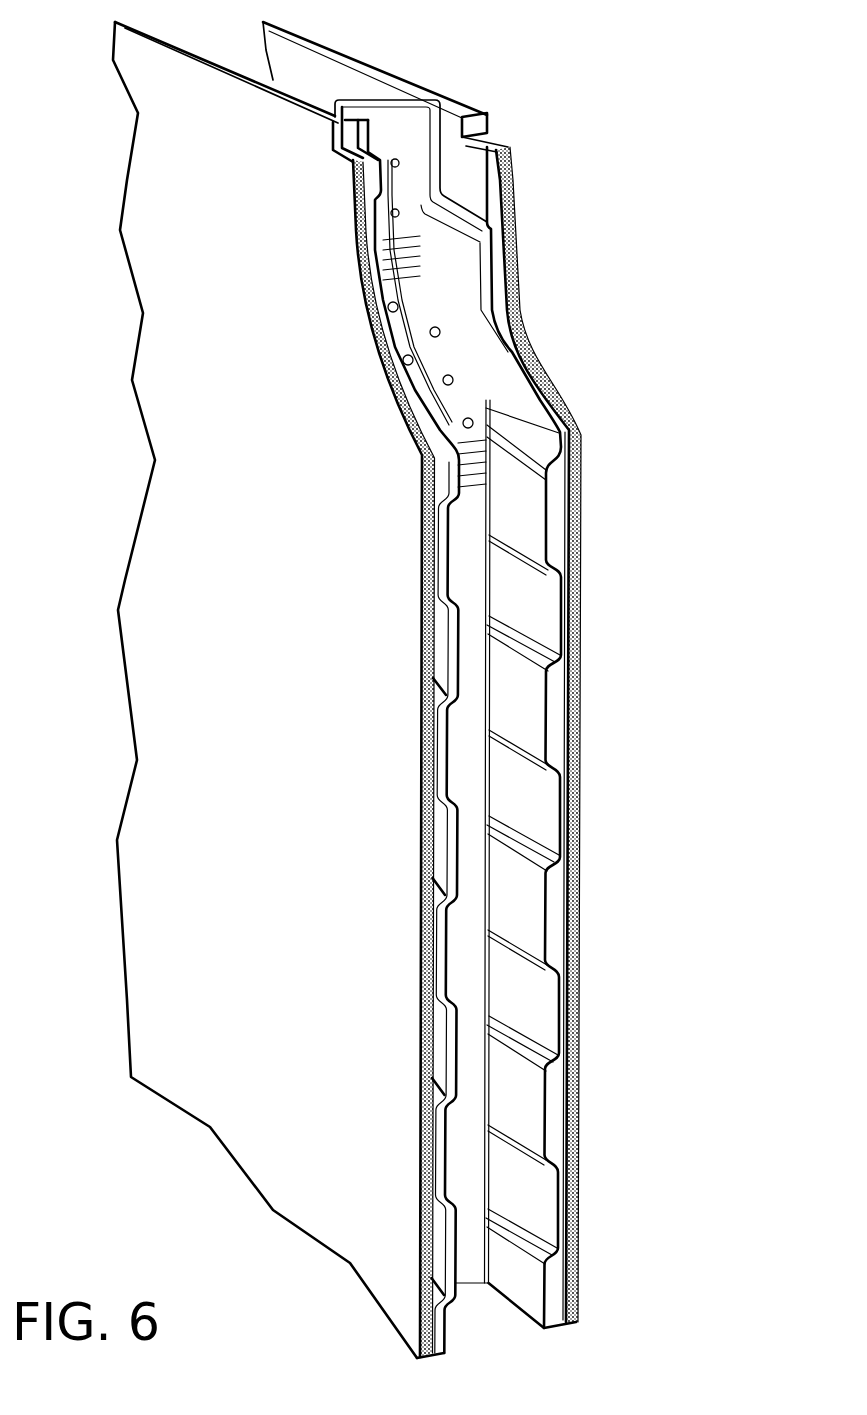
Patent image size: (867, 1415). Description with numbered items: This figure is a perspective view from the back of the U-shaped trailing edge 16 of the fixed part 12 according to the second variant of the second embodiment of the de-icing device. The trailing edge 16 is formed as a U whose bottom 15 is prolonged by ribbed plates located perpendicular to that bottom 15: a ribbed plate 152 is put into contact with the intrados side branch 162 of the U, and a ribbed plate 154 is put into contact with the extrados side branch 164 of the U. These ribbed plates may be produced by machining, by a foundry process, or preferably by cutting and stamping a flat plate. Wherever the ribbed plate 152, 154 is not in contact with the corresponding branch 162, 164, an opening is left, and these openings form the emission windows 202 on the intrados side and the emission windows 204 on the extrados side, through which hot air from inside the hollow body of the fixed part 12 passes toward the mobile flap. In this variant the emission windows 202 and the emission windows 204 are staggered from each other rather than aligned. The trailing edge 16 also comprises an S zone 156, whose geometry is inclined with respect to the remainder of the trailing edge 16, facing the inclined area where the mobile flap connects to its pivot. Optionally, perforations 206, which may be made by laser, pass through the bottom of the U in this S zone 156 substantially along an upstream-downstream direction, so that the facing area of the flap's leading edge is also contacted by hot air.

The fixed part 12 is at (170, 530).
The bottom of the trailing edge 15 is at (465, 946).
The trailing edge 16 is at (511, 729).
The ribbed plate 152 is at (565, 800).
The ribbed plate 154 is at (440, 748).
The S zone 156 is at (463, 397).
The branch of the U 162 is at (575, 596).
The branch of the U 164 is at (428, 645).
The emission windows 202 is at (568, 498).
The emission windows 204 is at (439, 828).
The perforations 206 is at (390, 212).